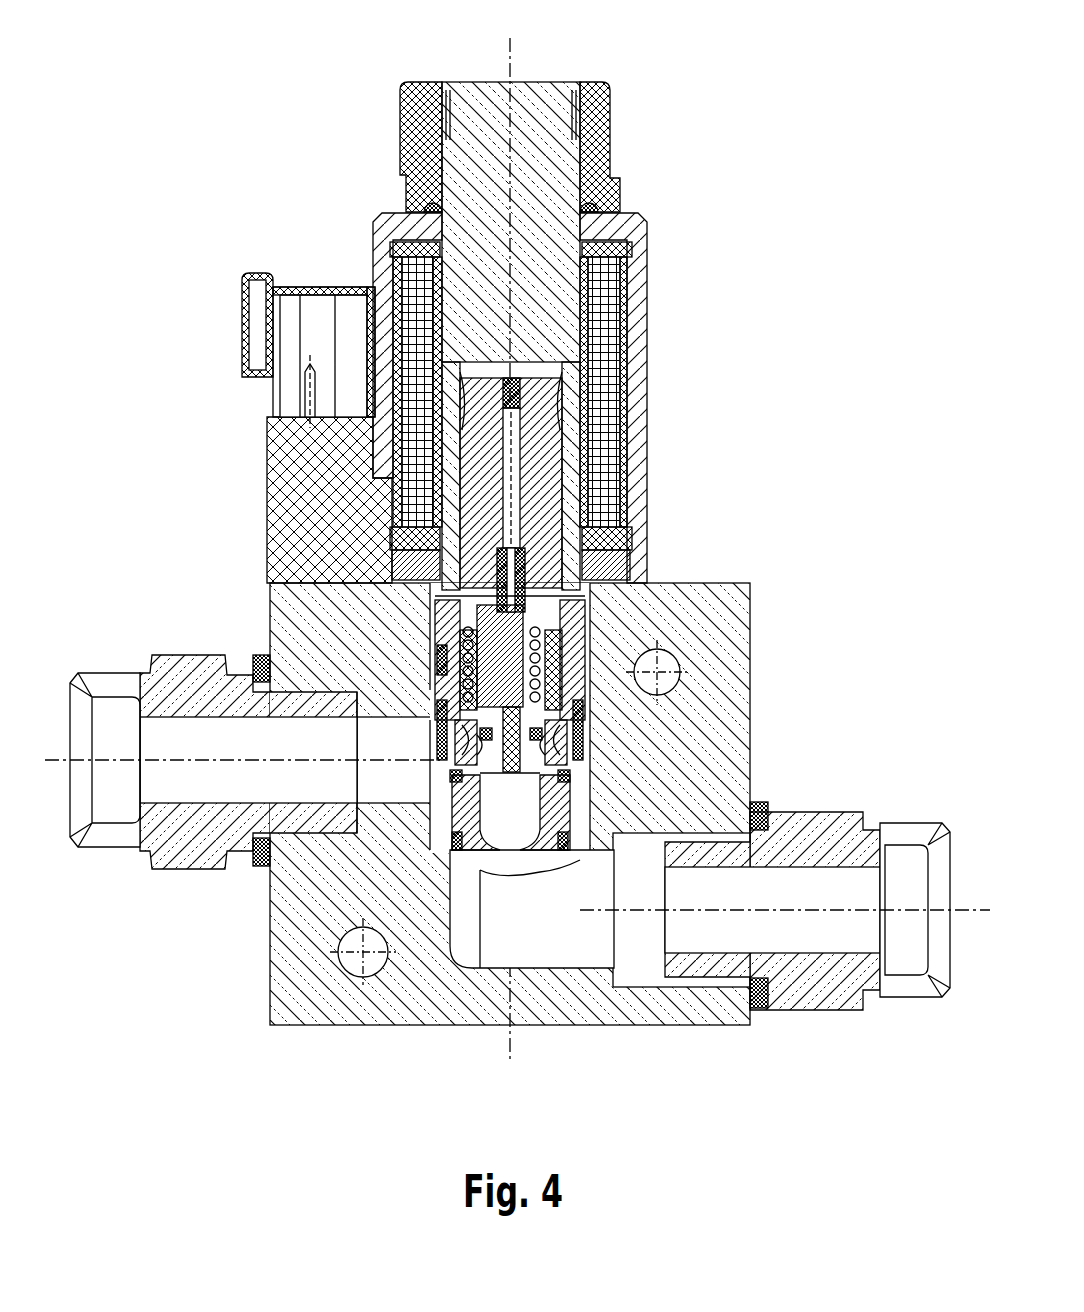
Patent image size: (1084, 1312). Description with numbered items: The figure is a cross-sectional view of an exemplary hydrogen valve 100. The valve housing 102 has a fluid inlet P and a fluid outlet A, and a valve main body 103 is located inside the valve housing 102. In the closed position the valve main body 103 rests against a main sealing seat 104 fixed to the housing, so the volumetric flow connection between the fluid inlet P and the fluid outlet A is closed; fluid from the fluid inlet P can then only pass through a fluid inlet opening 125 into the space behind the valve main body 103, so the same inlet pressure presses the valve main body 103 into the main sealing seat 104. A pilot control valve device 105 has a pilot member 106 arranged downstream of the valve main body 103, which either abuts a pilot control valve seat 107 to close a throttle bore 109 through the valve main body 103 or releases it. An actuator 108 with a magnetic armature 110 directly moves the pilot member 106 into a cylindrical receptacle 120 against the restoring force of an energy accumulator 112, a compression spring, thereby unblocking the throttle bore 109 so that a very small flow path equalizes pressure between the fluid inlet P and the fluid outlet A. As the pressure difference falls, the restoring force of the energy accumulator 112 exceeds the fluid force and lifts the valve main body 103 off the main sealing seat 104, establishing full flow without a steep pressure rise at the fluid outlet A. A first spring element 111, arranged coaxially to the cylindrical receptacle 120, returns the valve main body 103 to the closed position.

The hydrogen valve 100 is at (718, 279).
The valve housing 102 is at (652, 355).
The valve main body 103 is at (518, 712).
The main sealing seat 104 is at (558, 792).
The pilot control valve device 105 is at (470, 622).
The pilot member 106 is at (485, 658).
The pilot control valve seat 107 is at (560, 702).
The actuator 108 is at (445, 316).
The throttle bore 109 is at (486, 733).
The magnetic armature 110 is at (466, 468).
The first spring element 111 is at (462, 658).
The energy accumulator 112 is at (550, 662).
The cylindrical receptacle 120 is at (556, 638).
The fluid inlet opening 125 is at (462, 777).
The fluid inlet P is at (176, 786).
The fluid outlet A is at (850, 890).